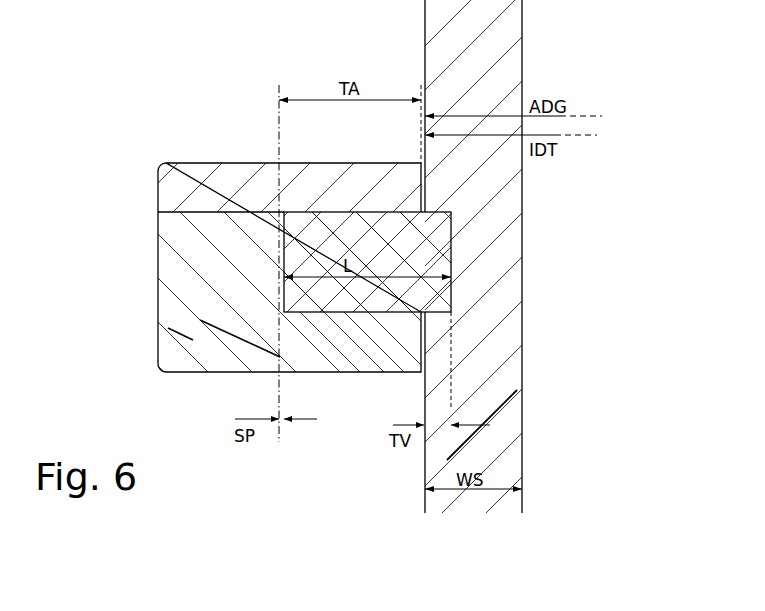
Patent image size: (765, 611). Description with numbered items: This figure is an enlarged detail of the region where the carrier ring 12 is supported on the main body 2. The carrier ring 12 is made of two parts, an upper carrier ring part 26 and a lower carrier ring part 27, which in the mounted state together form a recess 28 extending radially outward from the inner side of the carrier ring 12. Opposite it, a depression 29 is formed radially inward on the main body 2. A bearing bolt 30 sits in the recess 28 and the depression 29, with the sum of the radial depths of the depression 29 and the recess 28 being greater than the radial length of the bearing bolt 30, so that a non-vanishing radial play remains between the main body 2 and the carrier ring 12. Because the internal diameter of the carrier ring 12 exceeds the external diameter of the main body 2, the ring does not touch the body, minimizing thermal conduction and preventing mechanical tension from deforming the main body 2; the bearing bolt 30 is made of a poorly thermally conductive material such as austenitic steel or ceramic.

The main body 2 is at (500, 384).
The carrier ring 12 is at (173, 182).
The upper carrier ring part 26 is at (218, 178).
The lower carrier ring part 27 is at (168, 328).
The recess 28 is at (283, 277).
The depression 29 is at (452, 247).
The bearing bolt 30 is at (348, 293).